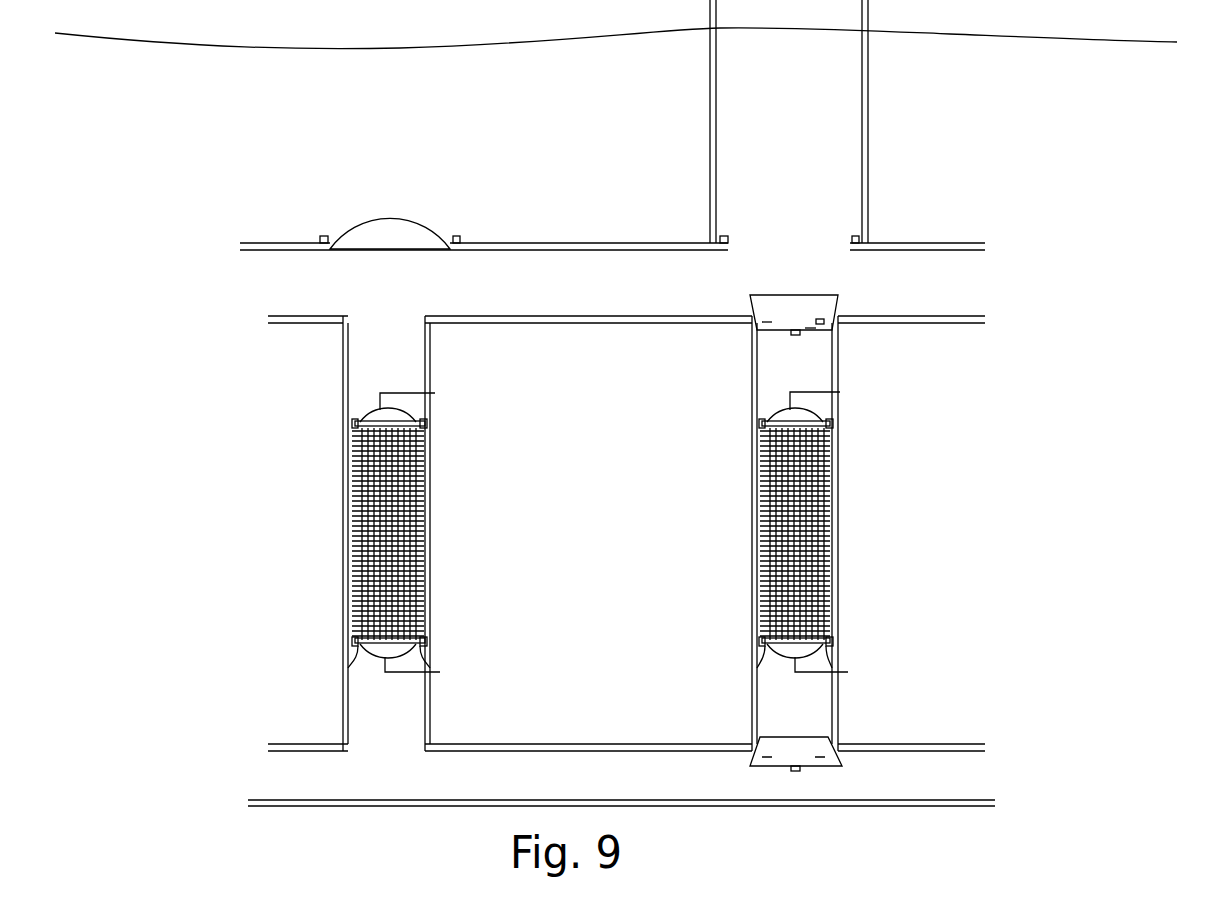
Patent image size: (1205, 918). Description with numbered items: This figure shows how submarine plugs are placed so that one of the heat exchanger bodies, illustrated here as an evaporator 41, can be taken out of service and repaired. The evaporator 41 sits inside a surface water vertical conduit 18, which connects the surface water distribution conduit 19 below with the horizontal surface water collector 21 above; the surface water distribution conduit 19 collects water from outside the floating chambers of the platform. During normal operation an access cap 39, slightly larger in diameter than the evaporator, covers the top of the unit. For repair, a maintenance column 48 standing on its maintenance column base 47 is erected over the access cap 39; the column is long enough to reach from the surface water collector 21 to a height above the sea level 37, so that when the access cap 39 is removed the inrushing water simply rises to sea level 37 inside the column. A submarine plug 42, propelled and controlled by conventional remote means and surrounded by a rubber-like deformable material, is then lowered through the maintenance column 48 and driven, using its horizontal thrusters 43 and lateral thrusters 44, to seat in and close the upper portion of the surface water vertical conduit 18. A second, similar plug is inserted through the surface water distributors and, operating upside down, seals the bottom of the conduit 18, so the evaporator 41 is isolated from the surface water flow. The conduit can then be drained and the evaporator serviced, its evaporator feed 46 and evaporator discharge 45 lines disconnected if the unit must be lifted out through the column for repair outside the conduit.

The surface water vertical conduit 18 is at (343, 347).
The surface water distribution conduit 19 is at (310, 772).
The horizontal surface water collector 21 is at (313, 290).
The sea level 37 is at (1010, 36).
The access cap 39 is at (382, 233).
The evaporator 41 is at (345, 481).
The submarine plug 42 is at (825, 302).
The horizontal thrusters 43 is at (810, 330).
The lateral thrusters 44 is at (800, 332).
The evaporator discharge 45 is at (840, 394).
The evaporator feed 46 is at (848, 672).
The maintenance column base 47 is at (458, 236).
The maintenance column 48 is at (868, 168).